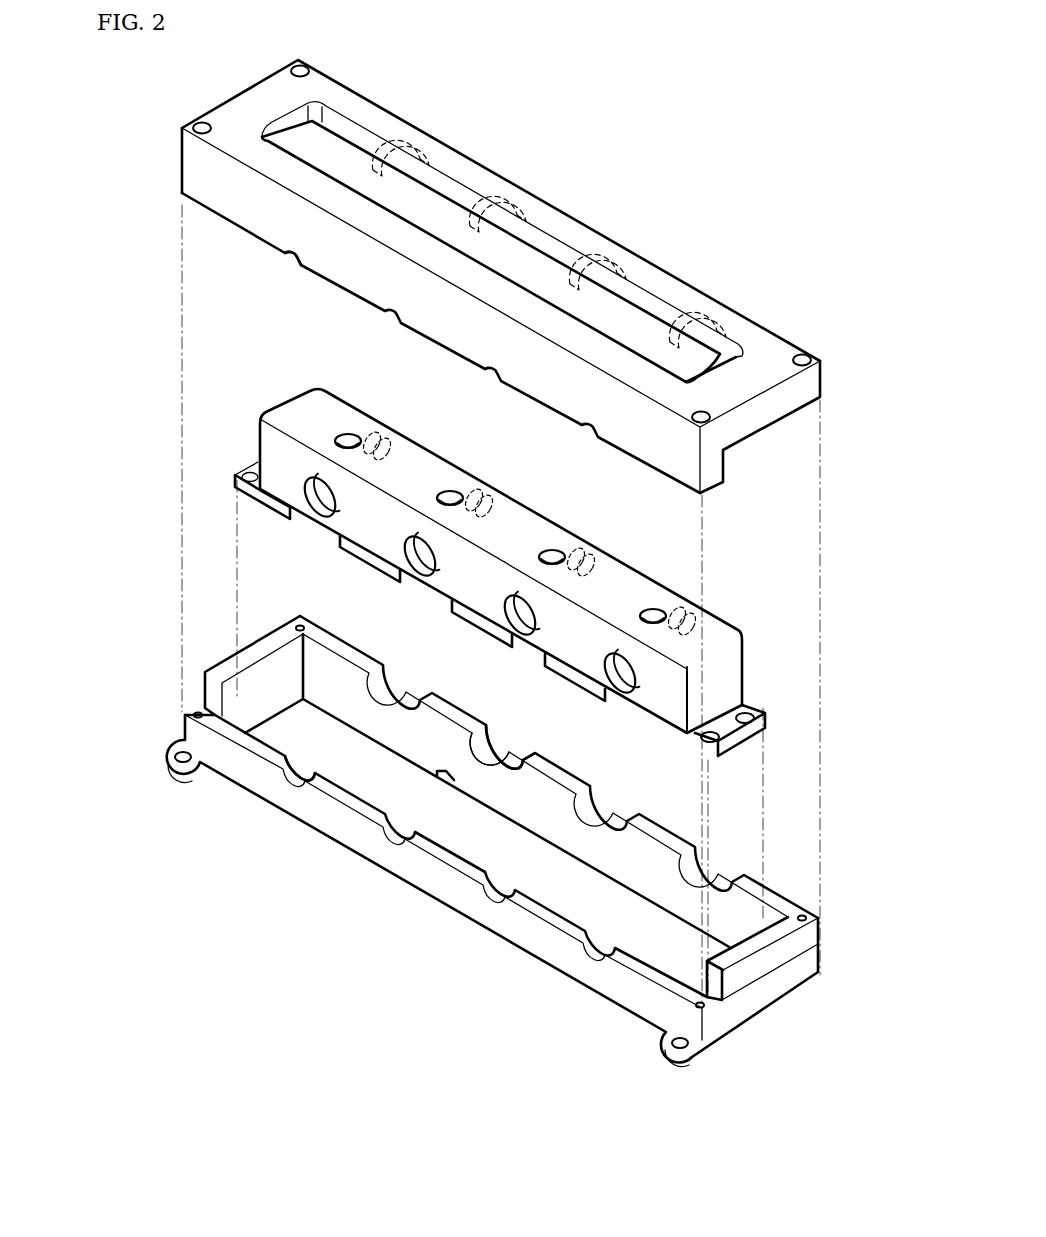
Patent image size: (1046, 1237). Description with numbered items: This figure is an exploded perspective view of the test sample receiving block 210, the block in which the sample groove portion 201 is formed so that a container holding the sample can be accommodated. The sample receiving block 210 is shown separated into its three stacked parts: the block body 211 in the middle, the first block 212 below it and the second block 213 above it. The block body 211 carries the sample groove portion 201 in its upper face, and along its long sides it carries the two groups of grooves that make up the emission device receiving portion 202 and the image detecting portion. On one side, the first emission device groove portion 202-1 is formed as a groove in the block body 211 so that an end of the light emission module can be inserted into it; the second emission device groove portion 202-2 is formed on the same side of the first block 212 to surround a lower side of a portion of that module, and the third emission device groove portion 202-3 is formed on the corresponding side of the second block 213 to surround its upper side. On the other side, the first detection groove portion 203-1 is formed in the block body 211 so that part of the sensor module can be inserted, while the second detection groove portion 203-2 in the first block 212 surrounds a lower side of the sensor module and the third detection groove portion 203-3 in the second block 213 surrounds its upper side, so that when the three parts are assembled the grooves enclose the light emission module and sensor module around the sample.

The sample receiving block 210 is at (731, 158).
The block body 211 is at (728, 680).
The first block 212 is at (805, 945).
The second block 213 is at (805, 388).
The sample groove portion 201 is at (348, 440).
The emission device receiving portion 202 is at (84, 365).
The first emission device groove portion 202-1 is at (320, 505).
The second emission device groove portion 202-2 is at (293, 772).
The third emission device groove portion 202-3 is at (292, 252).
The first detection groove portion 203-1 is at (490, 490).
The second detection groove portion 203-2 is at (500, 754).
The third detection groove portion 203-3 is at (515, 192).